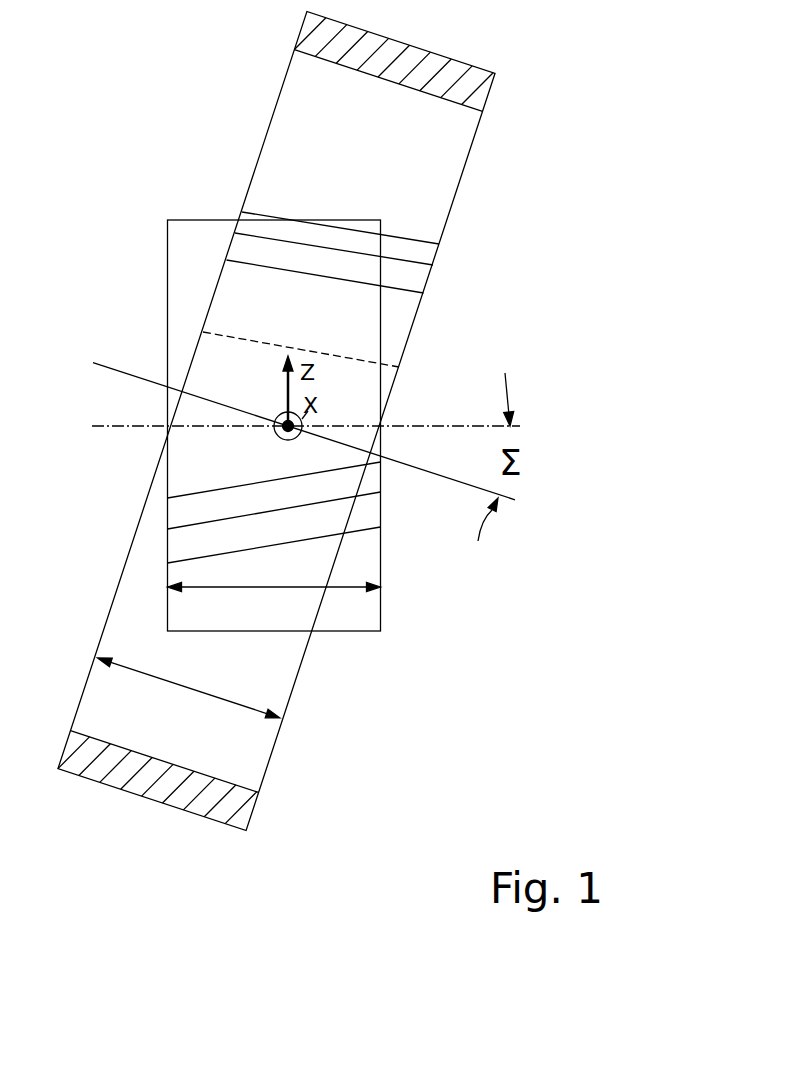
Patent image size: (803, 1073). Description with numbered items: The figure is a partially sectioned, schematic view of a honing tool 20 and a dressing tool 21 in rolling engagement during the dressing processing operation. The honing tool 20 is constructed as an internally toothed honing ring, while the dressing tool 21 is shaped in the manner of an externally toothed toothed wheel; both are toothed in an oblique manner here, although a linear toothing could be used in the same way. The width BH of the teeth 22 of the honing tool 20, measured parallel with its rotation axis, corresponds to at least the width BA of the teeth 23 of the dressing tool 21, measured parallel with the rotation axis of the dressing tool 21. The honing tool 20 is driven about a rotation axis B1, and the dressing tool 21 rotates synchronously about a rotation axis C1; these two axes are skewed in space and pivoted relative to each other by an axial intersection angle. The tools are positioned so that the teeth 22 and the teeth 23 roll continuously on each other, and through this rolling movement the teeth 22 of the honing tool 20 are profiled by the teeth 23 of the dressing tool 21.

The honing tool 20 is at (276, 421).
The dressing tool 21 is at (167, 276).
The teeth of the honing tool 22 is at (417, 248).
The teeth of the dressing tool 23 is at (180, 538).
The width of the teeth of the dressing tool BA is at (274, 577).
The width of the teeth of the honing tool BH is at (192, 675).
The rotation axis C1 is at (420, 426).
The rotation axis B1 is at (452, 483).